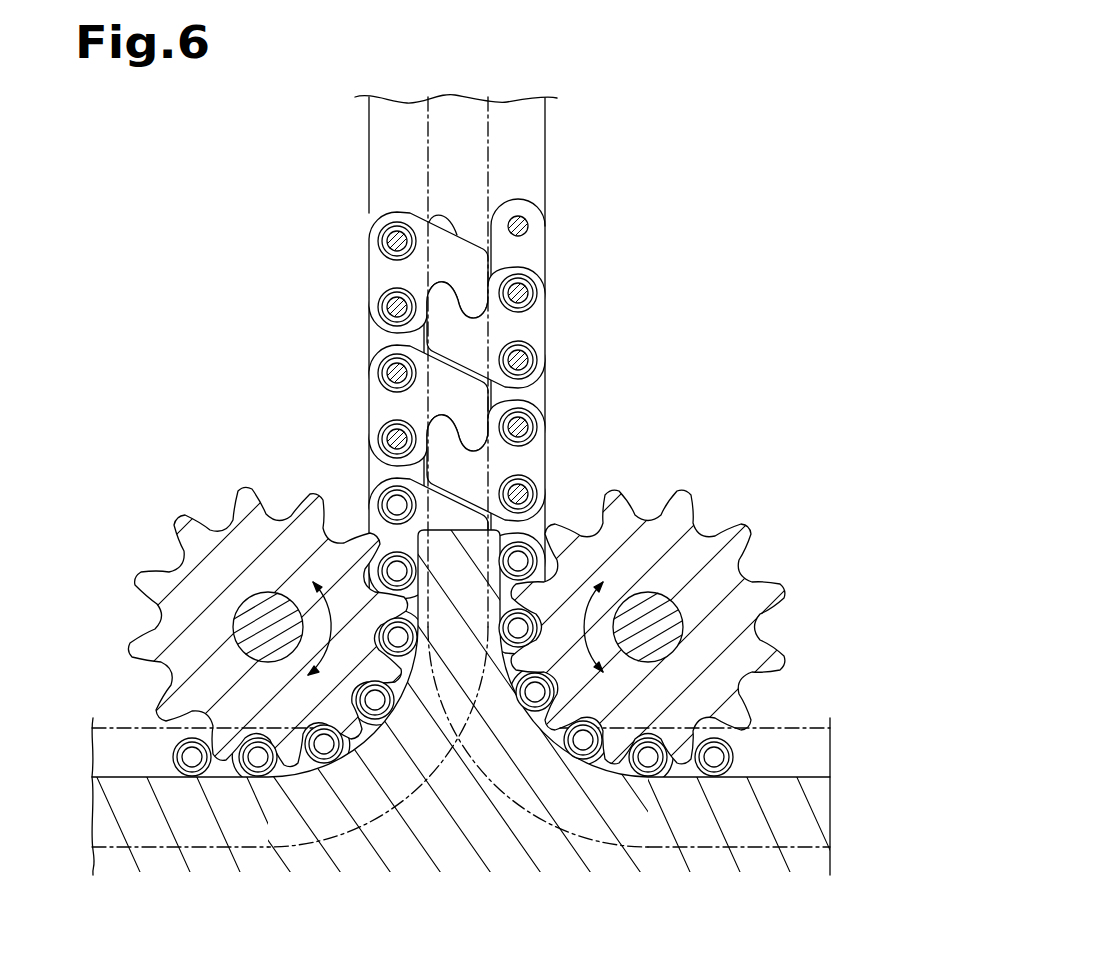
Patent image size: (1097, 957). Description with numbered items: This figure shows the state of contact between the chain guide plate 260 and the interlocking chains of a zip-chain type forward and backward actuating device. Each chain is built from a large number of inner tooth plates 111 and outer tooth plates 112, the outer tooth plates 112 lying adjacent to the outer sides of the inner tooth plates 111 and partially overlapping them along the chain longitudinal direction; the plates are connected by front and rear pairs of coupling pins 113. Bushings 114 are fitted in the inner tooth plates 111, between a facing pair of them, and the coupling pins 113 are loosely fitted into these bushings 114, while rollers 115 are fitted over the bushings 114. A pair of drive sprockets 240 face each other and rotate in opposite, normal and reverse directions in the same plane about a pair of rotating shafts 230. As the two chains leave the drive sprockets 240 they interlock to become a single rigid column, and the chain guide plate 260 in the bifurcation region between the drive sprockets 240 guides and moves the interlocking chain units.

The inner tooth plate 111 is at (368, 340).
The outer tooth plate 112 is at (380, 405).
The coupling pin 113 is at (378, 307).
The bushing 114 is at (378, 294).
The roller 115 is at (393, 289).
The rotating shaft 230 is at (253, 600).
The drive sprocket 240 is at (227, 530).
The chain guide plate 260 is at (718, 823).